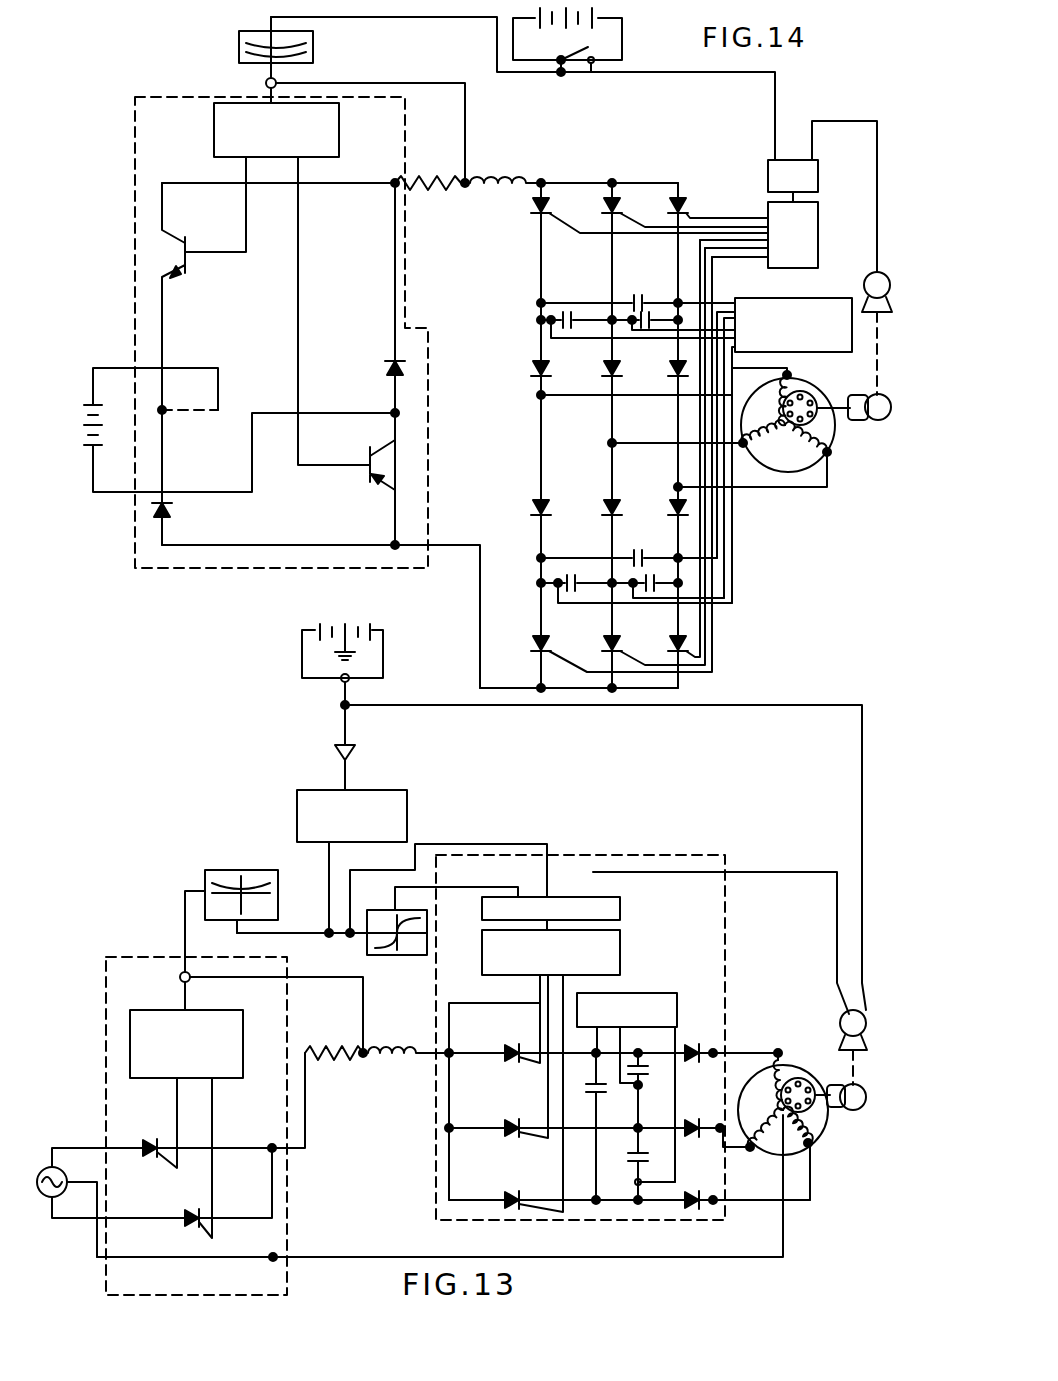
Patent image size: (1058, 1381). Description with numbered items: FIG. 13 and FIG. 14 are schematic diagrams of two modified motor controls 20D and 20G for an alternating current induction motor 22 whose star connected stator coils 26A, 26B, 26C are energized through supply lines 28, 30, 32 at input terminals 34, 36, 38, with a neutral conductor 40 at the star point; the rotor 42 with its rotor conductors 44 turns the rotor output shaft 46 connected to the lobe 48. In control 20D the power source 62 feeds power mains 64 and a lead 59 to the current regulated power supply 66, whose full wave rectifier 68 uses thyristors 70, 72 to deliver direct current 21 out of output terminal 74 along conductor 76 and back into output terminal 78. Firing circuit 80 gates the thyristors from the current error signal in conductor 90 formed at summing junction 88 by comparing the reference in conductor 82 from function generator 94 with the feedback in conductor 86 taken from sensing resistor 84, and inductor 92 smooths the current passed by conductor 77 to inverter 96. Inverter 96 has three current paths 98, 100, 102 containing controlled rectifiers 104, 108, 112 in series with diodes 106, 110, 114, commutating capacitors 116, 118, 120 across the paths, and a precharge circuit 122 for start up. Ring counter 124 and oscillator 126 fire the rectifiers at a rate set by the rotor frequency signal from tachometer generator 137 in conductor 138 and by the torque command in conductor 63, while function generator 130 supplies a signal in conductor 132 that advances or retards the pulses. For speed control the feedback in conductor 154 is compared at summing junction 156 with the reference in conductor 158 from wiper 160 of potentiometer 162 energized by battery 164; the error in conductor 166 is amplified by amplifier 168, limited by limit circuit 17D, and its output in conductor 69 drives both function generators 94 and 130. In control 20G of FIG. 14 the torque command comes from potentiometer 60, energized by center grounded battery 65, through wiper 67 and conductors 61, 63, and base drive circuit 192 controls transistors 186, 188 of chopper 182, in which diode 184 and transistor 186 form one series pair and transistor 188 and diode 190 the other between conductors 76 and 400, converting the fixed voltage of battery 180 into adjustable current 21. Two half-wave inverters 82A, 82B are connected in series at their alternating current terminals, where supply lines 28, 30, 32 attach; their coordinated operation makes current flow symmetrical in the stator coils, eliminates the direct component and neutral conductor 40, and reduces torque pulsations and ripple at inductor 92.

In FIG. 14, the function generator 94 is at (239, 42).
In FIG. 13, the function generator 94 is at (212, 870).
In FIG. 14, the summing junction 88 is at (266, 84).
In FIG. 13, the summing junction 88 is at (192, 982).
In FIG. 14, the conductor 90 is at (280, 78).
In FIG. 13, the conductor 90 is at (180, 981).
In FIG. 14, the chopper 182 is at (405, 117).
In FIG. 14, the base drive circuit 192 is at (339, 137).
In FIG. 14, the output terminal 74 is at (392, 180).
In FIG. 13, the output terminal 74 is at (278, 1150).
In FIG. 14, the power mains 64 is at (427, 155).
In FIG. 13, the power mains 64 is at (72, 1148).
In FIG. 14, the conductor 76 is at (466, 178).
In FIG. 13, the conductor 76 is at (368, 1048).
In FIG. 14, the conductor 77 is at (540, 180).
In FIG. 14, the resistor 84 is at (428, 200).
In FIG. 13, the resistor 84 is at (340, 1068).
In FIG. 14, the inductor 92 is at (500, 194).
In FIG. 13, the inductor 92 is at (398, 1064).
In FIG. 14, the transistor 186 is at (170, 242).
In FIG. 14, the diode 190 is at (384, 370).
In FIG. 14, the transistor 188 is at (380, 468).
In FIG. 14, the diode 184 is at (172, 512).
In FIG. 14, the battery 180 is at (88, 455).
In FIG. 14, the output terminal 78 is at (392, 544).
In FIG. 13, the output terminal 78 is at (272, 1252).
In FIG. 14, the conductor 400 is at (480, 545).
In FIG. 14, the half-wave inverter 82A is at (649, 287).
In FIG. 14, the half-wave inverter 82B is at (621, 456).
In FIG. 14, the center grounded battery 65 is at (556, 18).
In FIG. 14, the conductor 69 is at (557, 60).
In FIG. 13, the conductor 69 is at (329, 860).
In FIG. 14, the potentiometer 60 is at (584, 50).
In FIG. 14, the wiper 67 is at (596, 67).
In FIG. 14, the conductor 61 is at (558, 74).
In FIG. 13, the conductor 61 is at (318, 938).
In FIG. 14, the conductor 63 is at (597, 74).
In FIG. 13, the conductor 63 is at (470, 844).
In FIG. 14, the conductor 154 is at (842, 121).
In FIG. 13, the conductor 154 is at (578, 710).
In FIG. 14, the oscillator 126 is at (818, 176).
In FIG. 13, the oscillator 126 is at (620, 910).
In FIG. 14, the ring counter 124 is at (818, 236).
In FIG. 13, the ring counter 124 is at (620, 955).
In FIG. 14, the tachometer generator 137 is at (868, 278).
In FIG. 13, the tachometer generator 137 is at (843, 1012).
In FIG. 14, the precharge circuit 122 is at (790, 298).
In FIG. 13, the precharge circuit 122 is at (636, 993).
In FIG. 14, the motor input terminal 34 is at (786, 371).
In FIG. 13, the motor input terminal 34 is at (776, 1048).
In FIG. 14, the rotor 42 is at (802, 390).
In FIG. 13, the rotor 42 is at (810, 1084).
In FIG. 14, the rotor conductors 44 is at (823, 400).
In FIG. 13, the rotor conductors 44 is at (798, 1078).
In FIG. 14, the rotor output shaft 46 is at (853, 395).
In FIG. 13, the rotor output shaft 46 is at (830, 1107).
In FIG. 14, the lobe 48 is at (880, 394).
In FIG. 13, the lobe 48 is at (853, 1110).
In FIG. 14, the stator coil 26A is at (780, 402).
In FIG. 13, the stator coil 26A is at (778, 1082).
In FIG. 14, the stator coil 26B is at (773, 443).
In FIG. 13, the stator coil 26B is at (772, 1132).
In FIG. 14, the stator coil 26C is at (832, 450).
In FIG. 13, the stator coil 26C is at (810, 1150).
In FIG. 14, the alternating current induction motor 22 is at (843, 437).
In FIG. 13, the alternating current induction motor 22 is at (828, 1140).
In FIG. 14, the motor input terminal 36 is at (743, 448).
In FIG. 13, the motor input terminal 36 is at (753, 1151).
In FIG. 14, the motor input terminal 38 is at (831, 456).
In FIG. 13, the motor input terminal 38 is at (812, 1205).
In FIG. 14, the motor control 20G is at (478, 359).
In FIG. 13, the battery 164 is at (310, 632).
In FIG. 13, the potentiometer 162 is at (340, 676).
In FIG. 13, the wiper 160 is at (350, 674).
In FIG. 13, the conductor 158 is at (350, 696).
In FIG. 13, the summing junction 156 is at (340, 706).
In FIG. 13, the conductor 166 is at (342, 738).
In FIG. 13, the amplifier 168 is at (357, 752).
In FIG. 13, the limit circuit 17D is at (407, 802).
In FIG. 13, the function generator 130 is at (366, 948).
In FIG. 13, the conductor 132 is at (458, 886).
In FIG. 13, the conductor 138 is at (790, 873).
In FIG. 13, the inverter 96 is at (725, 958).
In FIG. 13, the conductor 86 is at (363, 981).
In FIG. 13, the firing circuit 80 is at (243, 1046).
In FIG. 13, the direct current 21 is at (364, 1076).
In FIG. 13, the current path 98 is at (485, 1060).
In FIG. 13, the controlled rectifier 104 is at (514, 1044).
In FIG. 13, the controlled rectifier 108 is at (516, 1120).
In FIG. 13, the current path 100 is at (485, 1135).
In FIG. 13, the controlled rectifier 112 is at (517, 1192).
In FIG. 13, the current path 102 is at (470, 1203).
In FIG. 13, the capacitor 120 is at (606, 1090).
In FIG. 13, the capacitor 116 is at (648, 1068).
In FIG. 13, the capacitor 118 is at (648, 1148).
In FIG. 13, the diode 106 is at (697, 1062).
In FIG. 13, the diode 110 is at (697, 1136).
In FIG. 13, the diode 114 is at (690, 1198).
In FIG. 13, the supply line 28 is at (736, 1050).
In FIG. 13, the supply line 30 is at (749, 1150).
In FIG. 13, the supply line 32 is at (762, 1203).
In FIG. 13, the neutral conductor 40 is at (662, 1256).
In FIG. 13, the controlled rectifier 70 is at (154, 1138).
In FIG. 13, the source of alternating current power 62 is at (64, 1176).
In FIG. 13, the full wave rectifier 68 is at (196, 1126).
In FIG. 13, the controlled rectifier 72 is at (194, 1208).
In FIG. 13, the conductor 59 is at (88, 1200).
In FIG. 13, the motor control 20D is at (382, 1176).
In FIG. 13, the current regulated power supply 66 is at (287, 1228).
In FIG. 13, the conductor 82 is at (185, 910).